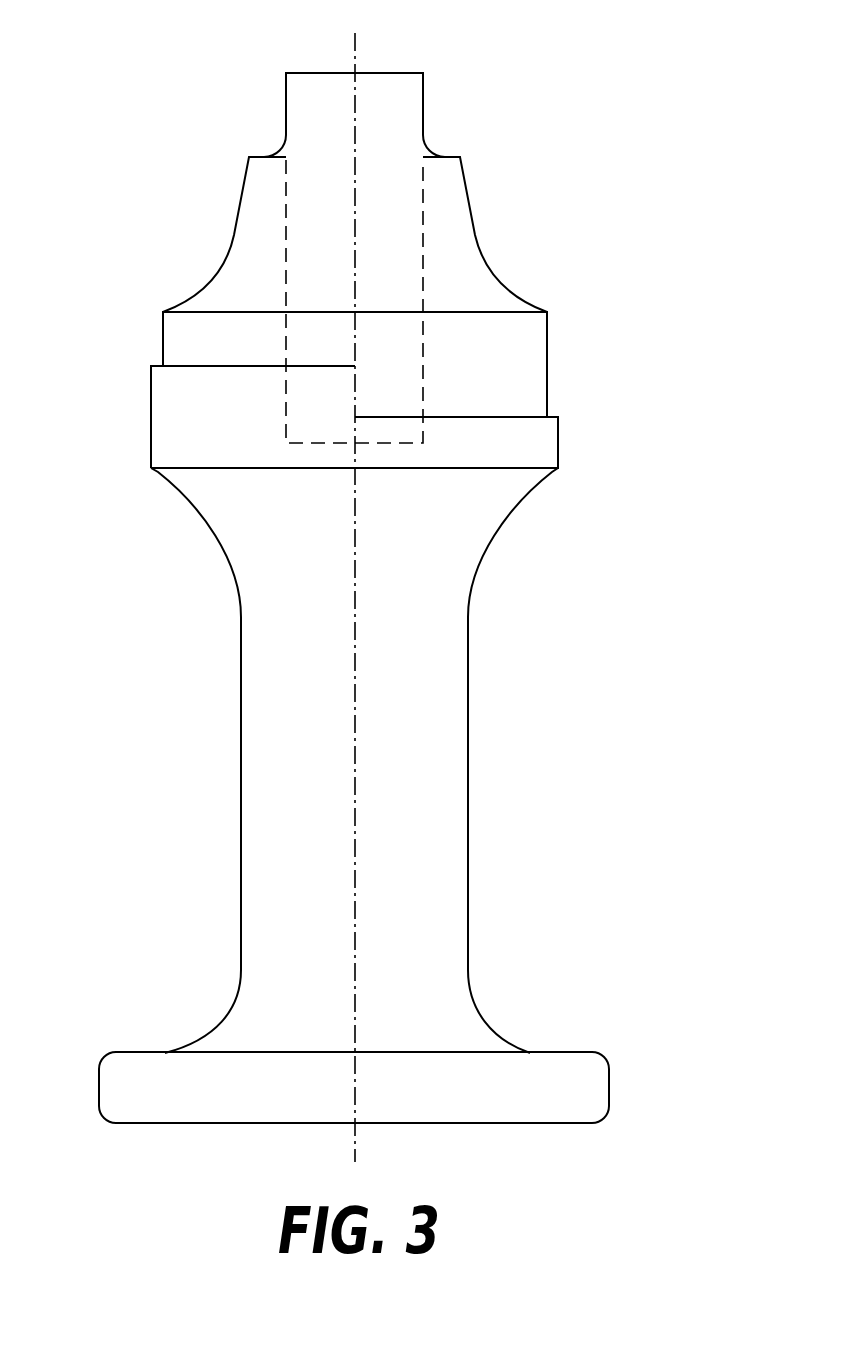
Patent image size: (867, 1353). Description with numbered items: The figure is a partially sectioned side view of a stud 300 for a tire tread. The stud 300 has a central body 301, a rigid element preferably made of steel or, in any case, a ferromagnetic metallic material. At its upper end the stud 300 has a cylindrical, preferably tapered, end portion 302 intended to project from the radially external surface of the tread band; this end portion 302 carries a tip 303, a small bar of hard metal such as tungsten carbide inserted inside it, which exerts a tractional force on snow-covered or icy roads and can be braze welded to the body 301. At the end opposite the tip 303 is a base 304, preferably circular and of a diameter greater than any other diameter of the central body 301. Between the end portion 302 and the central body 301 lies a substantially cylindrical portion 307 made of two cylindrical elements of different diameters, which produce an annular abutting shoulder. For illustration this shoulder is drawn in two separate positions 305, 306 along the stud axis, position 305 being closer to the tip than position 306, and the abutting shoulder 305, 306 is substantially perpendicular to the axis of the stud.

The stud 300 is at (388, 581).
The central body 301 is at (422, 685).
The end portion 302 is at (235, 270).
The tip 303 is at (394, 100).
The base 304 is at (582, 1095).
The abutting shoulder 305 is at (155, 364).
The abutting shoulder 306 is at (553, 417).
The portion 307 is at (517, 337).